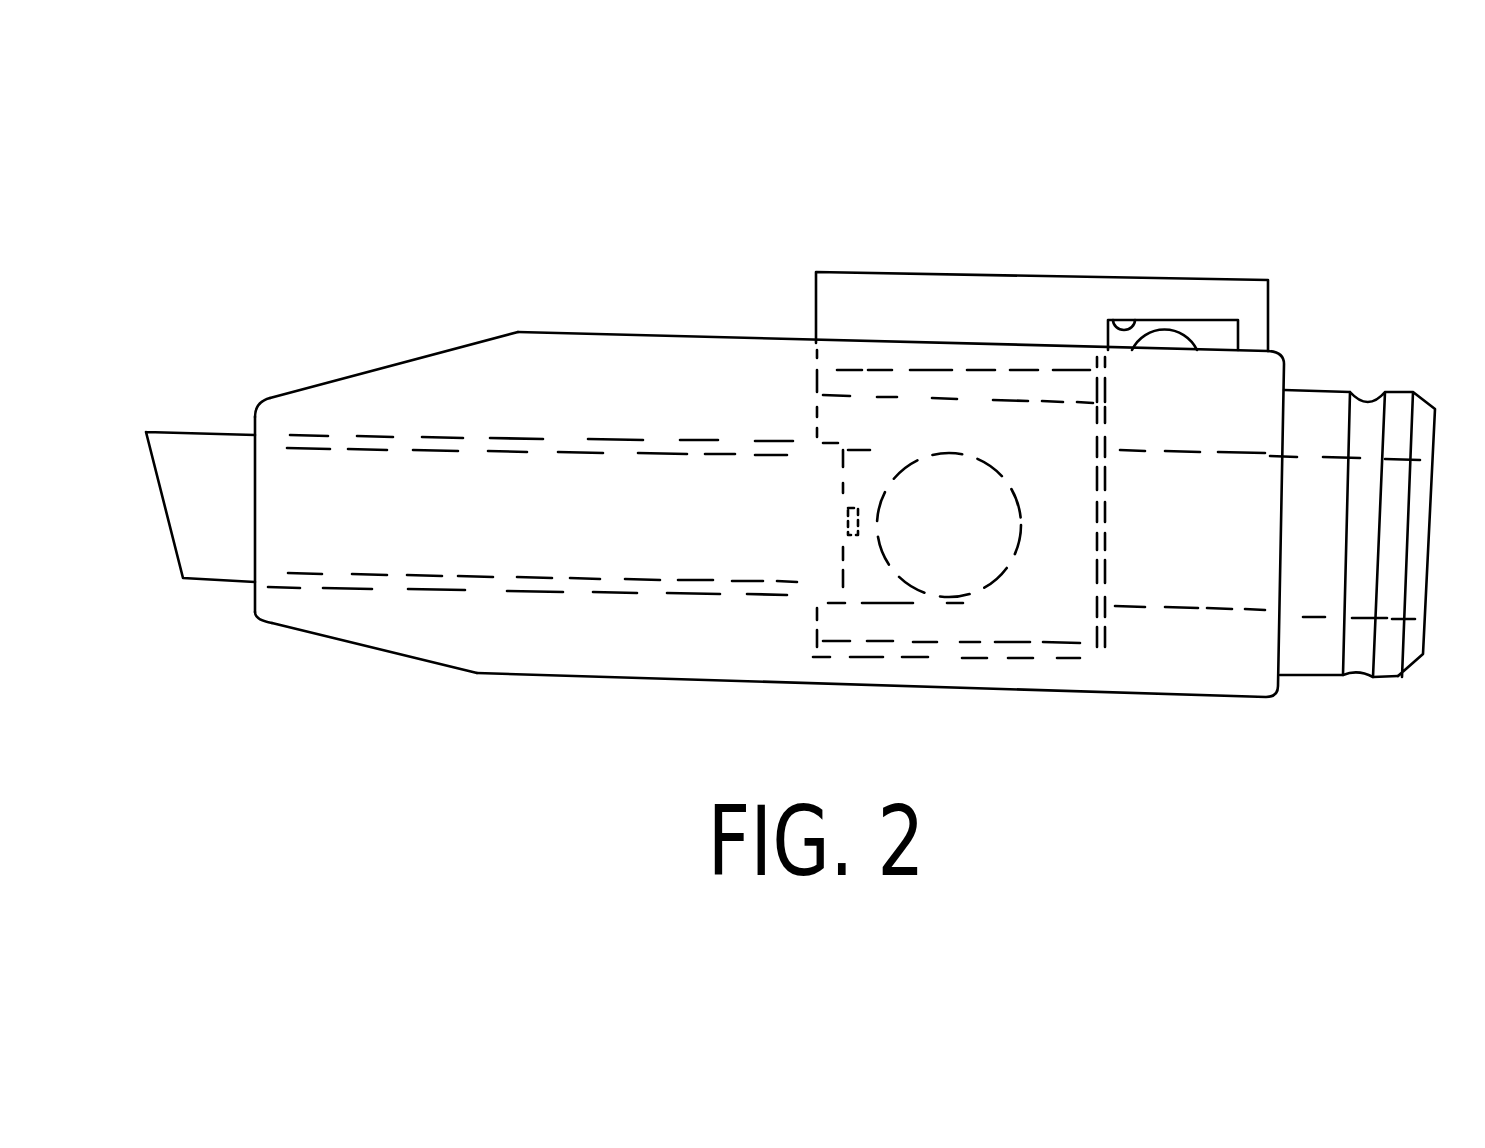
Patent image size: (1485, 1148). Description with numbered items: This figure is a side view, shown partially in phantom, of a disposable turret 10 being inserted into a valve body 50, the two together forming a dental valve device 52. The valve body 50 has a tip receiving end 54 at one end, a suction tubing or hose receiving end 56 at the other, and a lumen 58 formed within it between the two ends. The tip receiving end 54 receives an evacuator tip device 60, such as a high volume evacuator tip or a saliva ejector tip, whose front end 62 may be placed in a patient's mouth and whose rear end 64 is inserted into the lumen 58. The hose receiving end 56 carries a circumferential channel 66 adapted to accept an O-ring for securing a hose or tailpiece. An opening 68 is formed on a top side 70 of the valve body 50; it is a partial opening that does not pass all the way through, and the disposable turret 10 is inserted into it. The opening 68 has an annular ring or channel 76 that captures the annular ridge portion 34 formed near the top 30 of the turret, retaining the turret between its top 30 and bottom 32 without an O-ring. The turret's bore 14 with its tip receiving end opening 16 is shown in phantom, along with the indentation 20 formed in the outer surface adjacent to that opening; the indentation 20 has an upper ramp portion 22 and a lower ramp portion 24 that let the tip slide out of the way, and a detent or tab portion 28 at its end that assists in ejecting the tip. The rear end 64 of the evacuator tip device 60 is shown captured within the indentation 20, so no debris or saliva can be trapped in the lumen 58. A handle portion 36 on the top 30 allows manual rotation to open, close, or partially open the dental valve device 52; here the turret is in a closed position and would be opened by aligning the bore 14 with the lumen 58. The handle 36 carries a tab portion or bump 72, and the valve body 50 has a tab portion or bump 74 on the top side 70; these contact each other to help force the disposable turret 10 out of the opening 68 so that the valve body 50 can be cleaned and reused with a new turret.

The disposable turret 10 is at (913, 206).
The bore 14 is at (984, 497).
The tip receiving end opening 16 is at (1013, 553).
The indentation 20 is at (872, 455).
The upper ramp portion 22 is at (897, 447).
The lower ramp portion 24 is at (870, 600).
The detent or tab portion 28 is at (848, 525).
The top 30 is at (845, 272).
The bottom 32 is at (950, 633).
The annular ridge portion 34 is at (1058, 387).
The handle portion 36 is at (1256, 260).
The valve body 50 is at (428, 321).
The dental valve device 52 is at (571, 269).
The tip receiving end 54 is at (222, 384).
The hose receiving end 56 is at (1433, 351).
The lumen 58 is at (1183, 578).
The evacuator tip device 60 is at (204, 561).
The front end 62 is at (160, 497).
The rear end 64 is at (820, 480).
The circumferential channel 66 is at (1355, 678).
The opening 68 is at (812, 643).
The top side 70 is at (727, 338).
The tab portion or bump 72 is at (1125, 328).
The tab portion or bump 74 is at (1168, 328).
The annular ring or channel 76 is at (1110, 388).